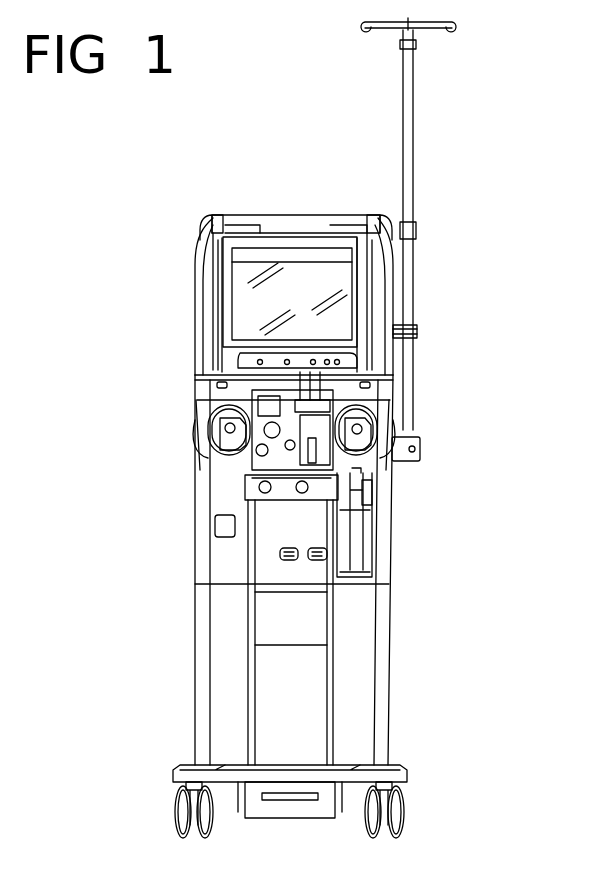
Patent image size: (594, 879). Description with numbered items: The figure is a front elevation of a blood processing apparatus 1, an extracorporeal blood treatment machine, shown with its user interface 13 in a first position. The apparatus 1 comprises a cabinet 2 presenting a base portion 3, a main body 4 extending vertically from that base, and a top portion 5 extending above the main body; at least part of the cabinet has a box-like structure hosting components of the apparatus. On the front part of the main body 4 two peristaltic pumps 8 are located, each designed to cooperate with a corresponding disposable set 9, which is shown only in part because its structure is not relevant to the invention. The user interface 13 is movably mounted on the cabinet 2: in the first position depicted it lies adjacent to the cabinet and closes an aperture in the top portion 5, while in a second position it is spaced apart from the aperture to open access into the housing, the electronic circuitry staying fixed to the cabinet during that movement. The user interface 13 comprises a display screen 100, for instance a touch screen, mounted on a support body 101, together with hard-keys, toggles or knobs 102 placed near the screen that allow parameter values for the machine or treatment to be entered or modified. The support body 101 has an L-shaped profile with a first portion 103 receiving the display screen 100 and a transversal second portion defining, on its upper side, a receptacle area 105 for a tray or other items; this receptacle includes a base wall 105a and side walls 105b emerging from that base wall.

The apparatus 1 is at (474, 133).
The cabinet 2 is at (412, 515).
The base portion 3 is at (190, 766).
The main body 4 is at (388, 565).
The top portion 5 is at (195, 385).
The pumps 8 is at (236, 433).
The disposable set 9 is at (314, 424).
The user interface 13 is at (265, 212).
The display screen 100 is at (332, 275).
The support body 101 is at (392, 302).
The hard-keys and/or toggles and/or knobs 102 is at (340, 363).
The first portion 103 is at (200, 293).
The receptacle area 105 is at (292, 226).
The base wall 105a is at (324, 226).
The side walls 105b is at (238, 214).